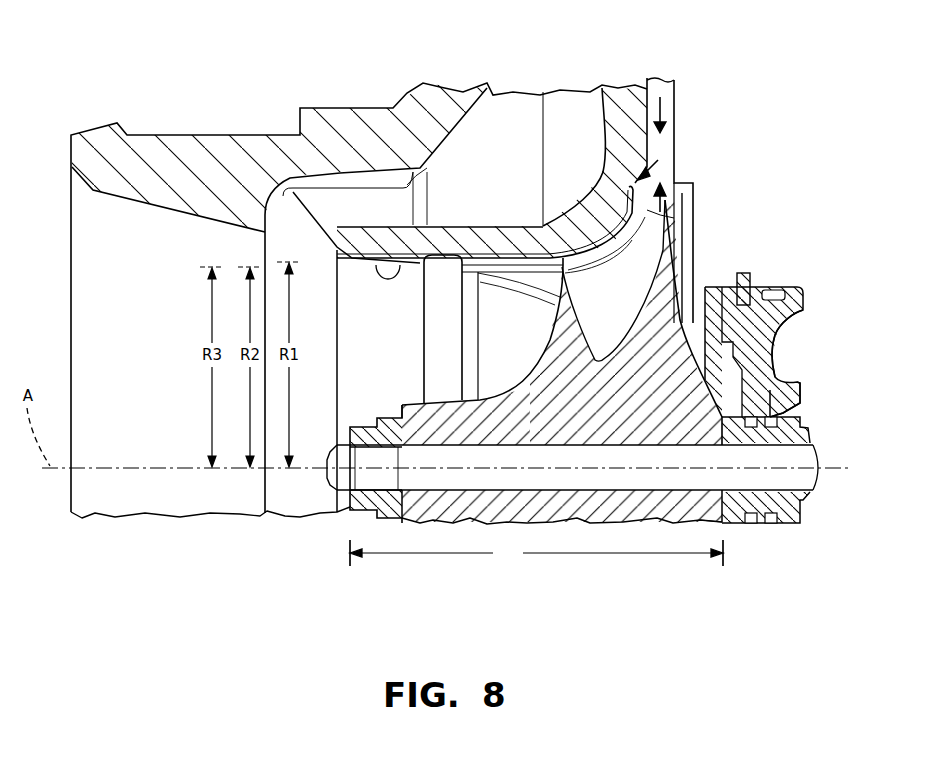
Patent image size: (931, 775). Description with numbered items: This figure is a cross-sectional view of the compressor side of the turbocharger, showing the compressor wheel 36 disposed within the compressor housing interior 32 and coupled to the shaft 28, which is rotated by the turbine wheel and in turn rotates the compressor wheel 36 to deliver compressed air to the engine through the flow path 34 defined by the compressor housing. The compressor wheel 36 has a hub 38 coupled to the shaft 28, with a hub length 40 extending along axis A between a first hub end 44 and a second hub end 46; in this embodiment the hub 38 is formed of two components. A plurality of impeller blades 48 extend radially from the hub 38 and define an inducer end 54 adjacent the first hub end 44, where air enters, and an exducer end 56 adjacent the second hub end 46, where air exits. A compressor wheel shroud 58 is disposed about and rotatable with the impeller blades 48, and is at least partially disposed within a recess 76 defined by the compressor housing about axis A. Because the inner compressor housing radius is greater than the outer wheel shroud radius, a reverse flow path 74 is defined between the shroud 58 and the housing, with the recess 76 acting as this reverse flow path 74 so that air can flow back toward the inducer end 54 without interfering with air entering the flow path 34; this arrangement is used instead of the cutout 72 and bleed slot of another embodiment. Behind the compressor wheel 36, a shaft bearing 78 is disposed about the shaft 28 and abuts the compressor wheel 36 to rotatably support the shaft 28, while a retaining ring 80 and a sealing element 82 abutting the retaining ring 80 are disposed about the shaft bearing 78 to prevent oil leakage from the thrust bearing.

The shaft 28 is at (800, 481).
The compressor housing interior 32 is at (405, 228).
The flow path 34 is at (663, 153).
The compressor wheel 36 is at (422, 423).
The hub 38 is at (565, 512).
The hub length 40 is at (536, 553).
The first hub end 44 is at (379, 576).
The second hub end 46 is at (704, 574).
The impeller blades 48 is at (585, 253).
The inducer end 54 is at (424, 576).
The exducer end 56 is at (649, 574).
The compressor wheel shroud 58 is at (468, 232).
The cutout 72 is at (651, 160).
The reverse flow path 74 is at (538, 226).
The recess 76 is at (520, 226).
The shaft bearing 78 is at (798, 425).
The retaining ring 80 is at (788, 352).
The sealing element 82 is at (798, 380).